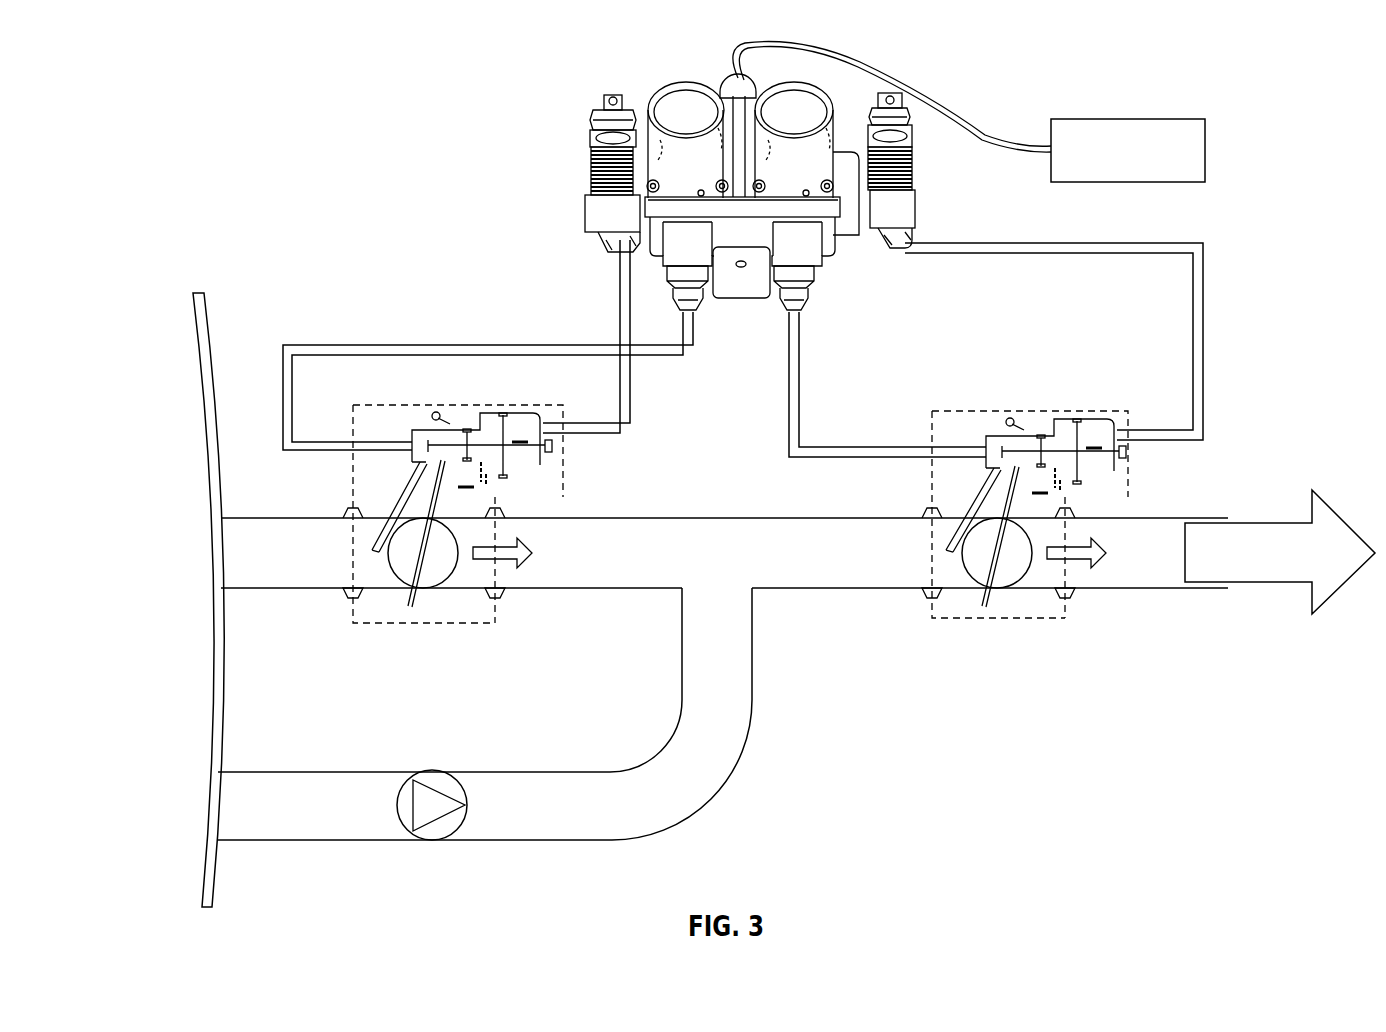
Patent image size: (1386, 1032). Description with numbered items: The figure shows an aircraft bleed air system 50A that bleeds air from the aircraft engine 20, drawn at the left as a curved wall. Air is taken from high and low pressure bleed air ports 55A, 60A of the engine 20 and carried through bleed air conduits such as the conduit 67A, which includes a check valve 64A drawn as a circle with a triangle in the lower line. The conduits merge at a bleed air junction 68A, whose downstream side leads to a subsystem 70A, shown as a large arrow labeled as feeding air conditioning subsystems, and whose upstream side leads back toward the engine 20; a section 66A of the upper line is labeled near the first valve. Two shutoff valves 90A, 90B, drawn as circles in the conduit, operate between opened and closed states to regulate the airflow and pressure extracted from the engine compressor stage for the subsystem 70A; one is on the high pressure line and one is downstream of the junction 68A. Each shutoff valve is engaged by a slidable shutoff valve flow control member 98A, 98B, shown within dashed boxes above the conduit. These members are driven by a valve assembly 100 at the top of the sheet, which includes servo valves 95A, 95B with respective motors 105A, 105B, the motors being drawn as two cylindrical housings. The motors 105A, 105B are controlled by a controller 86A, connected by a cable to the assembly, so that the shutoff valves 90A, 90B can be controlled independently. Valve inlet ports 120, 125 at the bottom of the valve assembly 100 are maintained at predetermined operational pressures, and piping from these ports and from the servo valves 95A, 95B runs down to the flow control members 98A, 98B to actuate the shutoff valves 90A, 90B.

The bleed air system 50A is at (231, 112).
The aircraft engine 20 is at (181, 649).
The bleed air port 55A is at (224, 547).
The inlet conduit section 66A is at (330, 578).
The shutoff valve flow control member 98A is at (563, 458).
The shutoff valve flow control member 98B is at (1128, 478).
The shutoff valve 90A is at (412, 600).
The shutoff valve 90B is at (987, 600).
The subsystem 70A is at (1268, 585).
The bleed air junction 68A is at (755, 592).
The bleed air port 60A is at (221, 805).
The bleed air conduit 67A is at (372, 842).
The check valve 64A is at (458, 781).
The controller 86A is at (1207, 148).
The valve assembly 100 is at (666, 179).
The motor 105A is at (682, 78).
The motor 105B is at (800, 76).
The servo valve 95A is at (660, 93).
The servo valve 95B is at (833, 101).
The valve inlet port 120 is at (702, 318).
The valve inlet port 125 is at (806, 312).